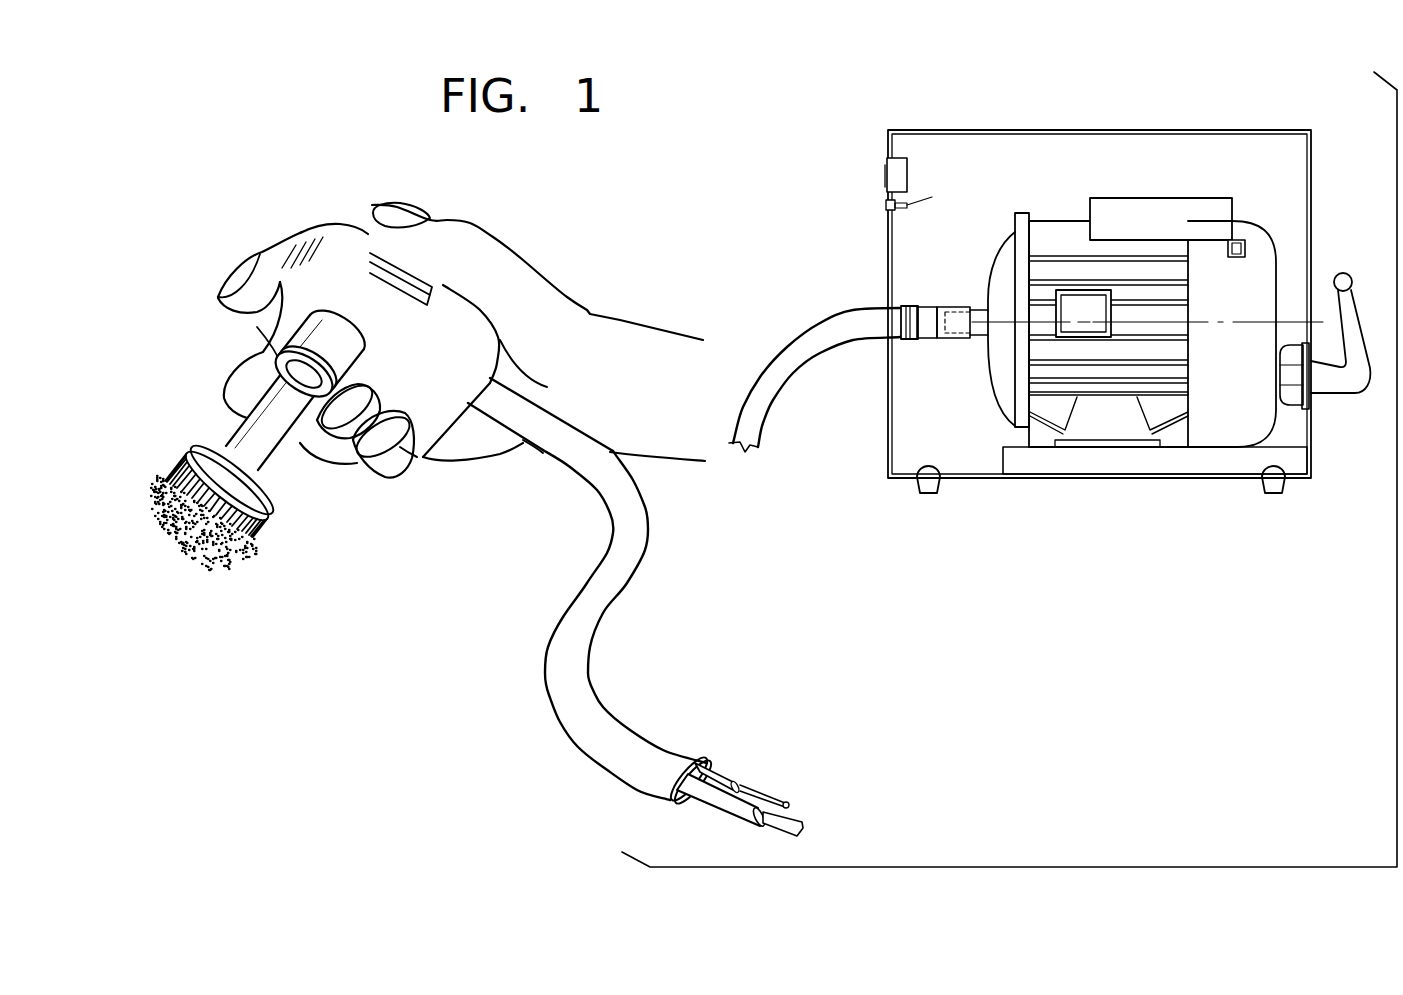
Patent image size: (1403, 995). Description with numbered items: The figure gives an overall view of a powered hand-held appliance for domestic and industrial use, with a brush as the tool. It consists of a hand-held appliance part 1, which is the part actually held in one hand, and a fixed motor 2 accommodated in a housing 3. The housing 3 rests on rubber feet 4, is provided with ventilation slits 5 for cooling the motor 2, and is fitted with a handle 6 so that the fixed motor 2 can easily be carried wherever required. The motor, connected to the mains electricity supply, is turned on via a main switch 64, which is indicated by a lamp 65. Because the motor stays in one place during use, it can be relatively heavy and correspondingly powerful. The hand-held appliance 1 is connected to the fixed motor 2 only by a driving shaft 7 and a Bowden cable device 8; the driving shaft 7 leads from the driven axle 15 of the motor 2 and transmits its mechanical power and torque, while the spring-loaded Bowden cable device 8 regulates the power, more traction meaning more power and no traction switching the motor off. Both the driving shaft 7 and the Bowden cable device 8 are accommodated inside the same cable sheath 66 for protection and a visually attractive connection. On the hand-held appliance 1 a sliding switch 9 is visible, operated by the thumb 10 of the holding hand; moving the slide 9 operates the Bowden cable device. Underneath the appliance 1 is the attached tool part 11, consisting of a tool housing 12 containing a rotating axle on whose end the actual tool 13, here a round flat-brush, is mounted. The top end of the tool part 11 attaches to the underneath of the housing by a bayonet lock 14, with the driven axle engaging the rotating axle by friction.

The hand-held appliance part 1 is at (323, 228).
The fixed motor 2 is at (1052, 233).
The housing 3 is at (1004, 132).
The rubber feet 4 is at (927, 493).
The ventilation slits 5 is at (1313, 160).
The handle 6 is at (1343, 273).
The driving shaft 7 is at (743, 813).
The Bowden cable device 8 is at (800, 812).
The sliding switch 9 is at (432, 287).
The thumb 10 is at (493, 253).
The tool part 11 is at (283, 465).
The tool housing 12 is at (237, 427).
The tool 13 is at (260, 533).
The bayonet lock 14 is at (303, 345).
The driven axle 15 is at (950, 317).
The main switch 64 is at (885, 170).
The lamp 65 is at (885, 207).
The cable sheath 66 is at (563, 677).